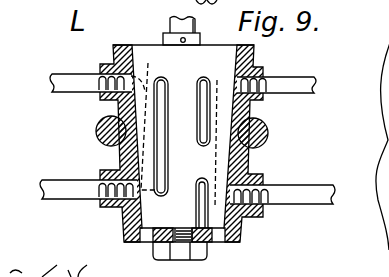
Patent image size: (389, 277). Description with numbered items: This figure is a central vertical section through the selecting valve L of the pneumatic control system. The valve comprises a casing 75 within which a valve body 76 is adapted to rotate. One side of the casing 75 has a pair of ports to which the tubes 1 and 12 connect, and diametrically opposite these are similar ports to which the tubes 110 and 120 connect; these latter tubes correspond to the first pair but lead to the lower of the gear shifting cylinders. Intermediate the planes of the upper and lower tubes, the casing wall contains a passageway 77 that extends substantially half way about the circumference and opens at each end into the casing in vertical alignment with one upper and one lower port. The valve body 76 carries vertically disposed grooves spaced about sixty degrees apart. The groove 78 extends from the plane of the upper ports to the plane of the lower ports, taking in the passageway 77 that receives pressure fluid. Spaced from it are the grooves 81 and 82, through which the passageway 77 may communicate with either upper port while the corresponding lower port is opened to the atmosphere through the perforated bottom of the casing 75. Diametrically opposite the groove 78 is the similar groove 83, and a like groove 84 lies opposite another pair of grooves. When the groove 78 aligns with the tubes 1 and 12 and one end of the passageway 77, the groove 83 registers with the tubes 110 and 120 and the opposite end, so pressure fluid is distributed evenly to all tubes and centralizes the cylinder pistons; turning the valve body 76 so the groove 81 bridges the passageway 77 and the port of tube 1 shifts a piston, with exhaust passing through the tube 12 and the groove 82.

The casing 75 is at (121, 216).
The valve body 76 is at (183, 42).
The passageway 77 is at (110, 133).
The groove 78 is at (218, 162).
The groove 81 is at (197, 84).
The groove 82 is at (203, 210).
The groove 83 is at (145, 118).
The groove 84 is at (162, 112).
The tube 1 is at (288, 82).
The tube 12 is at (296, 190).
The tube 110 is at (67, 80).
The tube 120 is at (57, 187).